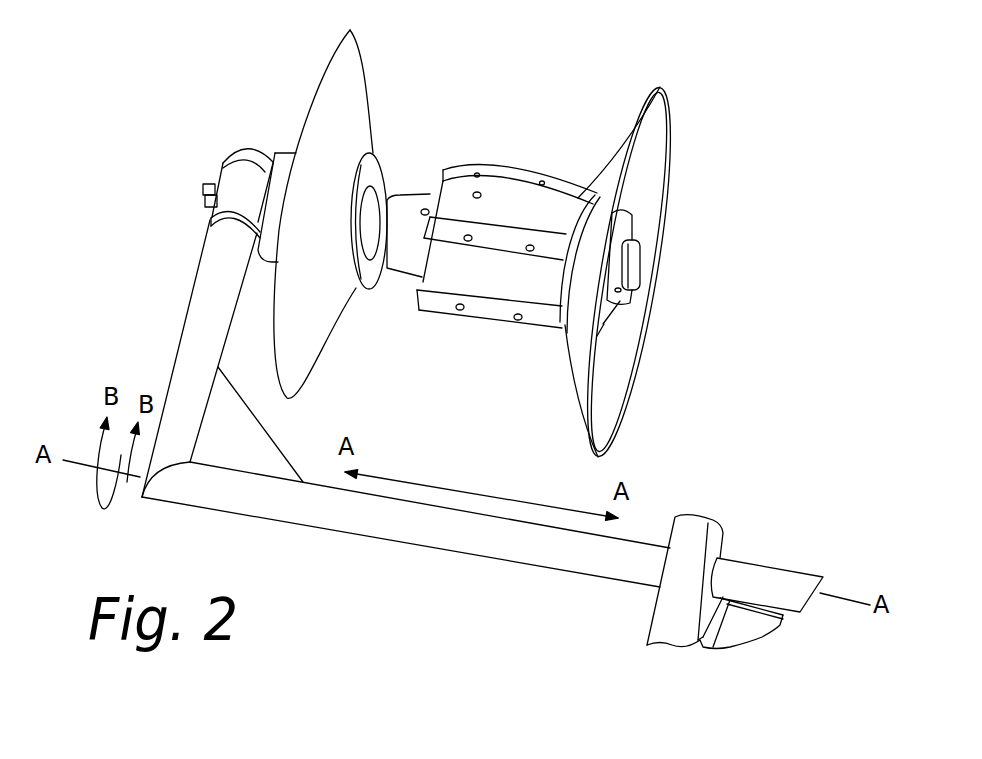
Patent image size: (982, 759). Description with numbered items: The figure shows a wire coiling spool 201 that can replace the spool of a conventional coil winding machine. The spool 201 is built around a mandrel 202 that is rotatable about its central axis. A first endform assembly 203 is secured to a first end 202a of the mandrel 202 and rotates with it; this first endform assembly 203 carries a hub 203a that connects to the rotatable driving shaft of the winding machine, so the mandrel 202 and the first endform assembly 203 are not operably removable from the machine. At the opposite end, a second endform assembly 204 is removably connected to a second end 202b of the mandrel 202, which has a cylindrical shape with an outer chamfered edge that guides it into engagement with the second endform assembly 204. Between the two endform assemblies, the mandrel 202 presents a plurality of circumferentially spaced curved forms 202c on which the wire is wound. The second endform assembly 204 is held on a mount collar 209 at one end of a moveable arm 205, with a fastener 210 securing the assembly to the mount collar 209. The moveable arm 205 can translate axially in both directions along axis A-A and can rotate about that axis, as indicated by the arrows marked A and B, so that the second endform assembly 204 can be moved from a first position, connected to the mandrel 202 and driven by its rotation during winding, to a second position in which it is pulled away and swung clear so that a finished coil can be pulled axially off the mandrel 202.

The wire coiling spool 201 is at (487, 113).
The mandrel 202 is at (532, 197).
The first end of the mandrel 202a is at (637, 290).
The second end of the mandrel 202b is at (403, 213).
The curved forms 202c is at (440, 318).
The first endform assembly 203 is at (673, 132).
The hub 203a is at (625, 260).
The second endform assembly 204 is at (323, 80).
The moveable arm 205 is at (202, 297).
The mount collar 209 is at (221, 170).
The fastener 210 is at (208, 203).